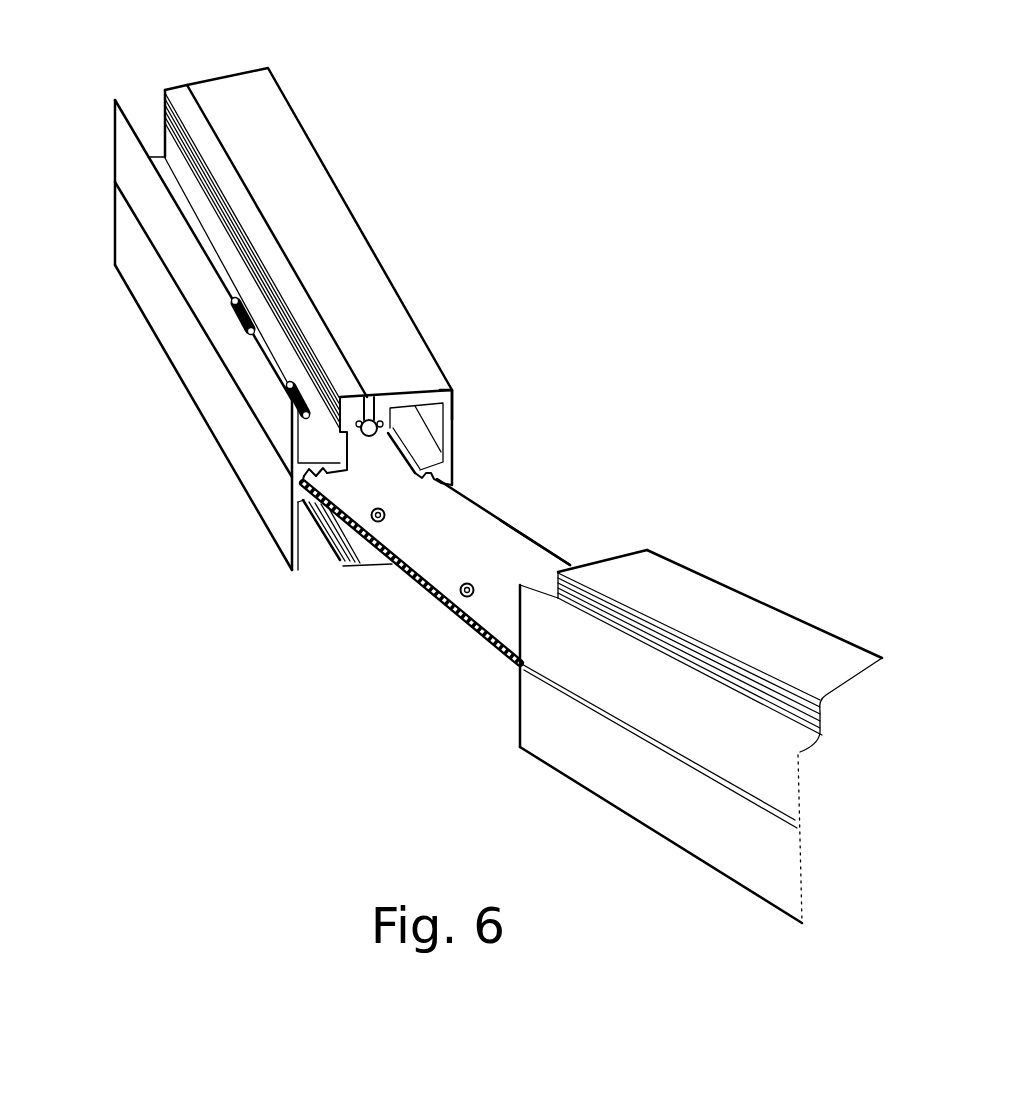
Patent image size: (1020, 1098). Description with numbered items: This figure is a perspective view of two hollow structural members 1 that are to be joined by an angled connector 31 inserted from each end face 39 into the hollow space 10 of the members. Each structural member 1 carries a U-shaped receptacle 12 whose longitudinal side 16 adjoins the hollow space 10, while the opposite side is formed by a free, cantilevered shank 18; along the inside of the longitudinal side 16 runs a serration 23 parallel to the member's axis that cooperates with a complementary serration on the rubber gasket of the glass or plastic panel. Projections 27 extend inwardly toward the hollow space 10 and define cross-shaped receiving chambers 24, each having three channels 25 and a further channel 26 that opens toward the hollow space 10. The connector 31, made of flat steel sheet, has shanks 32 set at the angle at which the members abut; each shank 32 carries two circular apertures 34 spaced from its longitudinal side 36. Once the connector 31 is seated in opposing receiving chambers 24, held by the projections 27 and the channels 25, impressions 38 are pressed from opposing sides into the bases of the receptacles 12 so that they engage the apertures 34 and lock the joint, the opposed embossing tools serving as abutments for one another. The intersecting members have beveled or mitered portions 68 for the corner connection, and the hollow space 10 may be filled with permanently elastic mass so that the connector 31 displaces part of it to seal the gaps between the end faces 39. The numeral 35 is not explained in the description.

The structural member 1 is at (320, 150).
The hollow space 10 is at (408, 447).
The receptacle 12 is at (124, 108).
The longitudinal side 16 is at (345, 540).
The shank 18 is at (275, 550).
The serration 23 is at (338, 392).
The receiving chamber 24 is at (373, 418).
The channel 25 is at (306, 480).
The channel 26 is at (438, 476).
The projection 27 is at (309, 470).
The connector 31 is at (445, 514).
The shank 32 is at (508, 558).
The circular aperture 34 is at (461, 592).
The lip edge 35 is at (304, 488).
The longitudinal side 36 is at (482, 637).
The impression 38 is at (297, 397).
The end face 39 is at (449, 390).
The beveled or mitered portion 68 is at (455, 428).